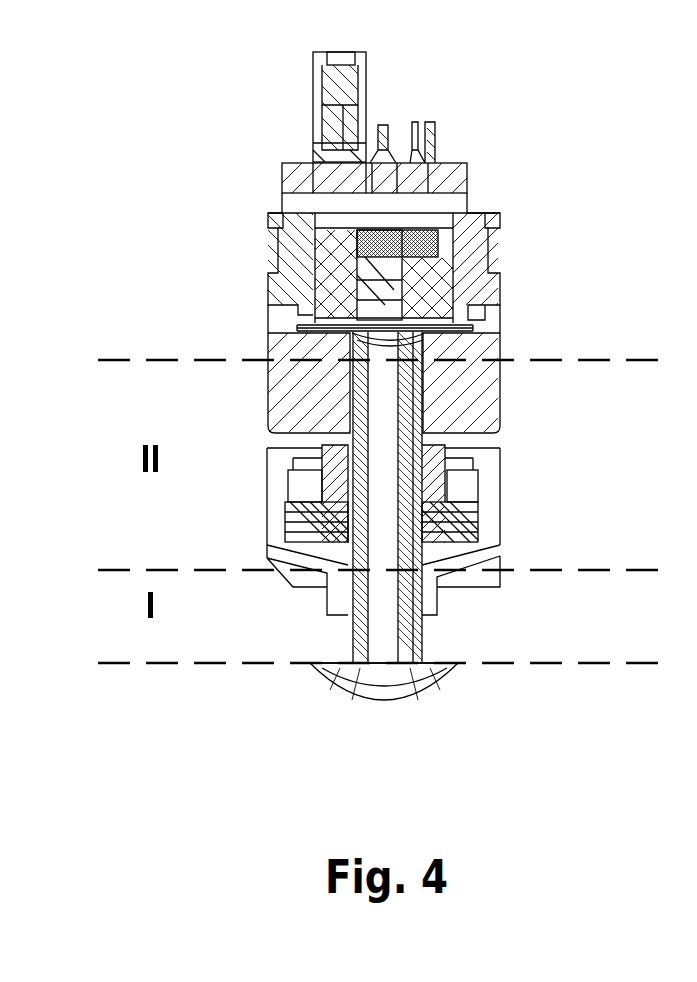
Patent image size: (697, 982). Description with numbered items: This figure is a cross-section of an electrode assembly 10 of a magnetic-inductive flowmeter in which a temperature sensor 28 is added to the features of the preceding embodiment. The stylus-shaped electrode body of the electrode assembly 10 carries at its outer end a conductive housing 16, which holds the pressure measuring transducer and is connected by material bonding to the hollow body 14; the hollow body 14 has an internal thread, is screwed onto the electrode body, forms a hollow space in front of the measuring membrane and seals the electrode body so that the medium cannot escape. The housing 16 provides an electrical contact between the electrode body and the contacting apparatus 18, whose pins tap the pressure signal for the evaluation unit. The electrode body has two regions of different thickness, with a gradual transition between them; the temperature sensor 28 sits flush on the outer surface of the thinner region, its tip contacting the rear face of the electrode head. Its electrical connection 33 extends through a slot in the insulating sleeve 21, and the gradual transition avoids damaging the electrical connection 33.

The electrode assembly 10 is at (292, 719).
The hollow body 14 is at (487, 378).
The housing 16 is at (477, 283).
The contacting apparatus 18 is at (383, 123).
The insulating sleeve 21 is at (487, 475).
The temperature sensor 28 is at (420, 620).
The electrical connection 33 is at (510, 543).